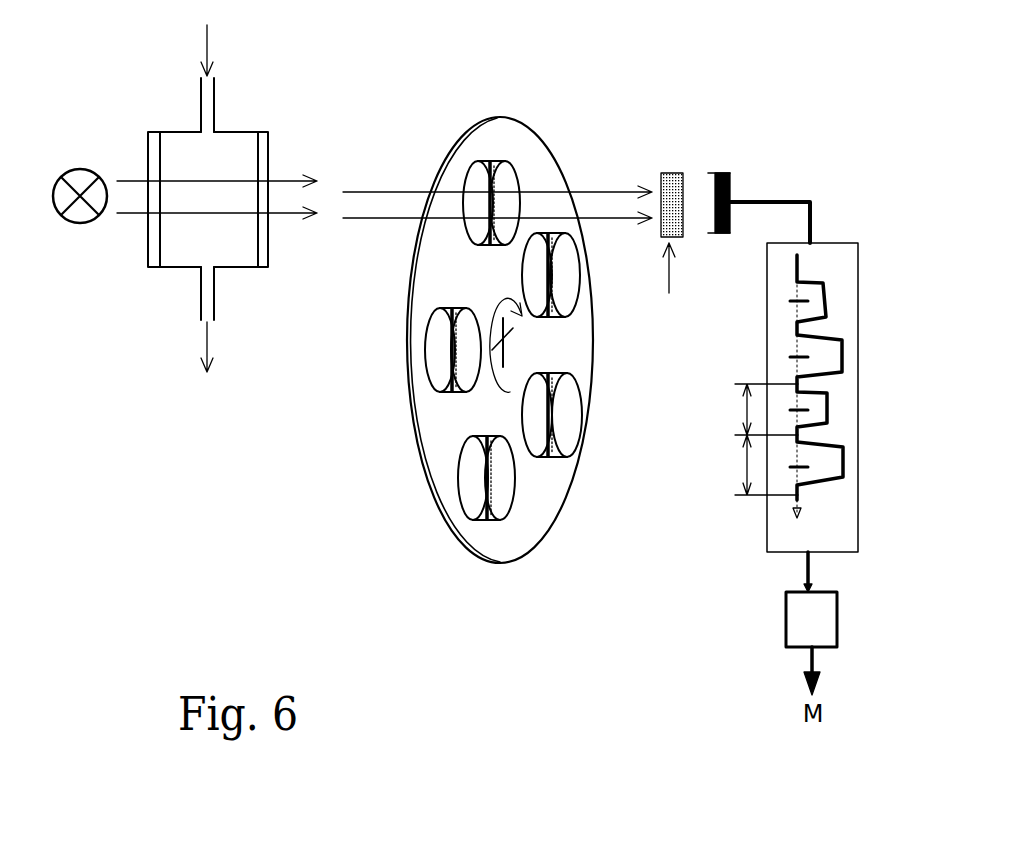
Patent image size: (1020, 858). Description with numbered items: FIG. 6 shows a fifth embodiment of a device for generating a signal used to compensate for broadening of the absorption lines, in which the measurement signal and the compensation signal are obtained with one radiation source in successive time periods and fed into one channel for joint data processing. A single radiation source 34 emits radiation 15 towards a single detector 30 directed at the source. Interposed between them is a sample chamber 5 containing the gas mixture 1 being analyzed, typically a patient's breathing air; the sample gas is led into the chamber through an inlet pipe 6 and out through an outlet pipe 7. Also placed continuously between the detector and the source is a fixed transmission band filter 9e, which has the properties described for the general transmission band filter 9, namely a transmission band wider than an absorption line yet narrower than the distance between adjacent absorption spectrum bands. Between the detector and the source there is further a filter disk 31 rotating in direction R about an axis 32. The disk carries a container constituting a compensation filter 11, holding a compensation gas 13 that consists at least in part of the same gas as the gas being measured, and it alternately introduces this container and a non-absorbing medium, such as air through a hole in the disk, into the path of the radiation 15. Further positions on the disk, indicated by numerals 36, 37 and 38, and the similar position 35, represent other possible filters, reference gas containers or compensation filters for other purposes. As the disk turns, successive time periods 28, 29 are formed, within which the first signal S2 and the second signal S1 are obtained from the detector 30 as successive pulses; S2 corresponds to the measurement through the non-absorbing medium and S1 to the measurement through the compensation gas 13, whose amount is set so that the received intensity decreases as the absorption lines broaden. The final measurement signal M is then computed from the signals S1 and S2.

The radiation source 34 is at (62, 172).
The sample chamber 5 is at (238, 268).
The gas mixture 1 is at (225, 247).
The inlet pipe 6 is at (198, 92).
The outlet pipe 7 is at (202, 300).
The radiation 15 is at (381, 182).
The filter disk 31 is at (535, 508).
The compensation gas 13 is at (505, 180).
The compensation filter 11 is at (485, 162).
The sample holder 35 is at (567, 268).
The other filter 36 is at (465, 348).
The other filter 37 is at (503, 482).
The other filter 38 is at (565, 437).
The axis 32 is at (517, 342).
The fixed transmission band filter 9e is at (672, 172).
The transmission band filter 9 is at (667, 285).
The detector 30 is at (732, 182).
The second signal S1 is at (777, 413).
The first signal S2 is at (831, 470).
The time period 28 is at (749, 409).
The time period 29 is at (750, 465).